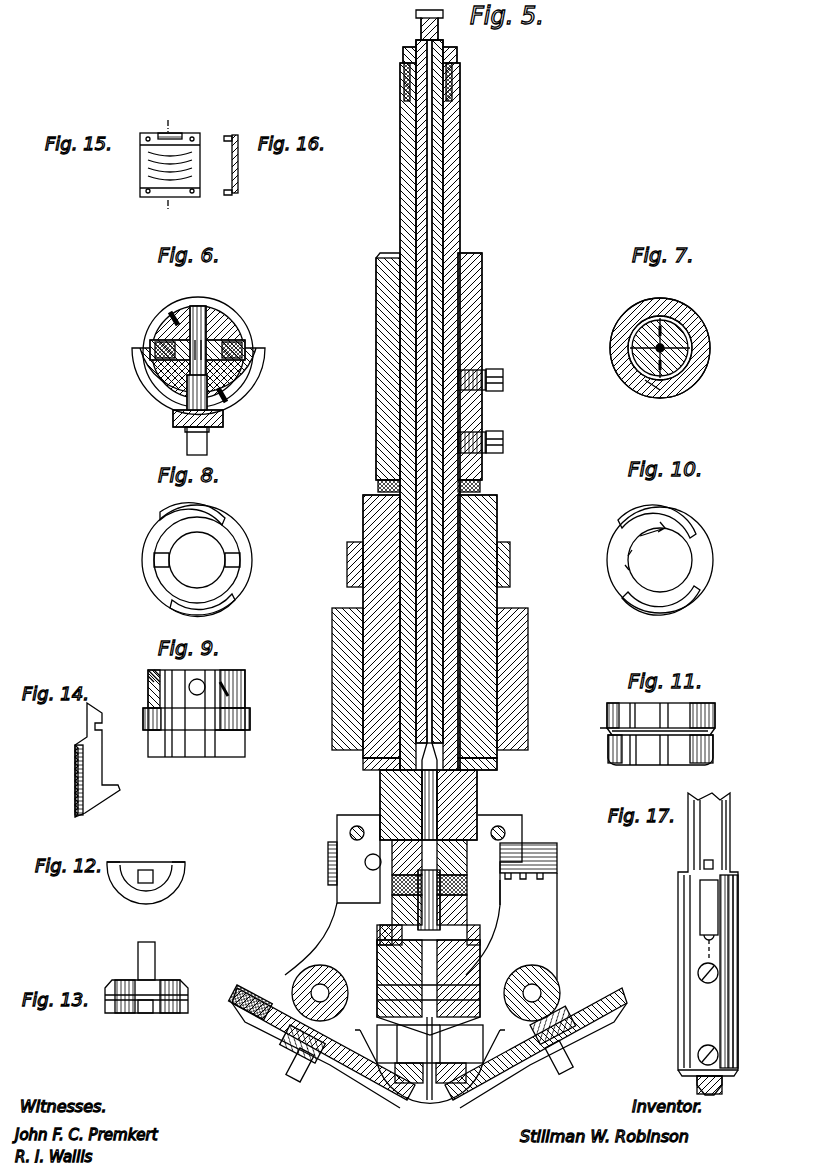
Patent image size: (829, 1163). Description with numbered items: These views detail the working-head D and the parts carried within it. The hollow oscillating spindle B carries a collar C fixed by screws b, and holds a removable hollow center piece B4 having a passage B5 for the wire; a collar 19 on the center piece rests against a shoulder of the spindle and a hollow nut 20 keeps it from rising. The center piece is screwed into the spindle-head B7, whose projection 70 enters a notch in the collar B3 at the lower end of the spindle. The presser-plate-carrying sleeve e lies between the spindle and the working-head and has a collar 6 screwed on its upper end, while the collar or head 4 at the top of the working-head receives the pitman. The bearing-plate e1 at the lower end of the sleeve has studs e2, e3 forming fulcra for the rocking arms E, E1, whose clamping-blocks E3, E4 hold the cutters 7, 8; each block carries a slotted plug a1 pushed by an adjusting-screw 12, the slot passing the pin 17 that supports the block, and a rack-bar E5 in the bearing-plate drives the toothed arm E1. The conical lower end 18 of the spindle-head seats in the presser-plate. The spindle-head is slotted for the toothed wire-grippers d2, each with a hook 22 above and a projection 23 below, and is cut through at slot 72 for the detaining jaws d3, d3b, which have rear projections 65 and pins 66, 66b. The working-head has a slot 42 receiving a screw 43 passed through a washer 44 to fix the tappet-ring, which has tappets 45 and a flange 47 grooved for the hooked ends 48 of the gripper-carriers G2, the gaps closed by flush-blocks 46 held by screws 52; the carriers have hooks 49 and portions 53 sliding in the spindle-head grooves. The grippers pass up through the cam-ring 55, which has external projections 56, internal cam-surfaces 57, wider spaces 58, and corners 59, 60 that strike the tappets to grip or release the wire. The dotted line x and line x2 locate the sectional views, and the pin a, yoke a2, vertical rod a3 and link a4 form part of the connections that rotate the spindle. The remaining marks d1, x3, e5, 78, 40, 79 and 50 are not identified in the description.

In FIG. 5, the dotted line x is at (416, 14).
In FIG. 5, the hollow oscillating spindle B is at (460, 222).
In FIG. 5, the passage B5 is at (433, 178).
In FIG. 5, the removable hollow center piece B4 is at (418, 226).
In FIG. 5, the spindle-head B7 is at (460, 818).
In FIG. 6, the spindle-head B7 is at (218, 306).
In FIG. 17, the spindle-head B7 is at (740, 908).
In FIG. 5, the collar B3 is at (368, 858).
In FIG. 5, the hollow nut 20 is at (457, 60).
In FIG. 5, the collar 19 is at (455, 104).
In FIG. 5, the collar C is at (438, 372).
In FIG. 5, the screws b is at (489, 411).
In FIG. 5, the collar 6 is at (440, 626).
In FIG. 5, the collar or head 4 is at (437, 564).
In FIG. 5, the working-head D is at (488, 645).
In FIG. 6, the working-head D is at (266, 366).
In FIG. 5, the presser-plate-carrying sleeve e is at (470, 612).
In FIG. 5, the working lever or arm E is at (403, 895).
In FIG. 5, the working lever or arm E1 is at (539, 926).
In FIG. 5, the cutter-holding clamping-block E3 is at (275, 1030).
In FIG. 5, the cutter-holding clamping-block E4 is at (560, 1032).
In FIG. 5, the rack-bar E5 is at (541, 861).
In FIG. 5, the hooks 22 is at (476, 929).
In FIG. 14, the hooks 22 is at (111, 702).
In FIG. 5, the projections 23 is at (486, 1012).
In FIG. 14, the projections 23 is at (129, 792).
In FIG. 5, the hooked upper ends 48 is at (392, 880).
In FIG. 5, the screws 52 is at (392, 894).
In FIG. 6, the screws 52 is at (240, 346).
In FIG. 5, the flush-blocks 46 is at (392, 910).
In FIG. 8, the flush-blocks 46 is at (197, 561).
In FIG. 5, the gripper-carriers G2 is at (392, 915).
In FIG. 5, the vertical pin a is at (392, 930).
In FIG. 8, the vertical pin a is at (201, 560).
In FIG. 9, the vertical pin a is at (204, 713).
In FIG. 5, the transversely-slotted plug a1 is at (285, 1040).
In FIG. 6, the yoke a2 is at (258, 380).
In FIG. 7, the yoke a2 is at (700, 342).
In FIG. 9, the yoke a2 is at (125, 746).
In FIG. 14, the yoke a2 is at (95, 760).
In FIG. 12, the yoke a2 is at (156, 883).
In FIG. 13, the yoke a2 is at (158, 996).
In FIG. 15, the vertical rod a3 is at (159, 165).
In FIG. 6, the vertical rod a3 is at (240, 320).
In FIG. 6, the link a4 is at (238, 338).
In FIG. 5, the hooks or projections 49 is at (480, 952).
In FIG. 12, the hooks or projections 49 is at (144, 884).
In FIG. 13, the hooks or projections 49 is at (146, 1013).
In FIG. 5, the nut flange d1 is at (380, 996).
In FIG. 5, the wire-grippers d2 is at (480, 978).
In FIG. 5, the detaining jaws d3 is at (338, 912).
In FIG. 5, the section line x2 is at (377, 977).
In FIG. 5, the ratchet x3 is at (518, 896).
In FIG. 5, the cam-ring 55 is at (480, 995).
In FIG. 7, the cam-ring 55 is at (668, 348).
In FIG. 10, the cam-ring 55 is at (690, 600).
In FIG. 11, the cam-ring 55 is at (668, 746).
In FIG. 5, the bearing-plate e1 is at (337, 927).
In FIG. 5, the pin or stud e2 is at (296, 990).
In FIG. 5, the pin or stud e3 is at (556, 982).
In FIG. 5, the lower bearing e5 is at (478, 1095).
In FIG. 5, the adjusting-screw 12 is at (247, 1002).
In FIG. 5, the pin 17 is at (300, 1055).
In FIG. 5, the conical lower end 18 is at (430, 1044).
In FIG. 5, the point piece 78 is at (385, 1112).
In FIG. 7, the point piece 78 is at (676, 318).
In FIG. 17, the point piece 78 is at (697, 1088).
In FIG. 5, the cutter 7 is at (370, 1082).
In FIG. 5, the cutter 8 is at (485, 1075).
In FIG. 15, the pins 66 is at (150, 190).
In FIG. 16, the pins 66b is at (219, 160).
In FIG. 16, the projections 65 is at (239, 140).
In FIG. 16, the detaining jaw d3b is at (232, 160).
In FIG. 6, the pin 40 is at (112, 395).
In FIG. 6, the slot 42 is at (222, 402).
In FIG. 6, the screw 43 is at (187, 444).
In FIG. 6, the washer 44 is at (175, 422).
In FIG. 8, the tappets 45 is at (220, 514).
In FIG. 9, the tappets 45 is at (195, 748).
In FIG. 7, the shoulder or flange 47 is at (640, 385).
In FIG. 8, the shoulder or flange 47 is at (204, 530).
In FIG. 9, the shoulder or flange 47 is at (208, 687).
In FIG. 7, the screw 79 is at (648, 318).
In FIG. 17, the screw 79 is at (718, 973).
In FIG. 10, the cam-surfaces 57 is at (658, 560).
In FIG. 10, the wider spaces 58 is at (678, 516).
In FIG. 10, the corners 59 is at (618, 524).
In FIG. 10, the corners 60 is at (697, 530).
In FIG. 10, the projections 56 is at (712, 545).
In FIG. 11, the projections 56 is at (606, 712).
In FIG. 12, the portions 53 is at (146, 870).
In FIG. 13, the portions 53 is at (157, 961).
In FIG. 13, the washer 50 is at (130, 1005).
In FIG. 17, the projection 70 is at (715, 866).
In FIG. 17, the slot 72 is at (700, 898).